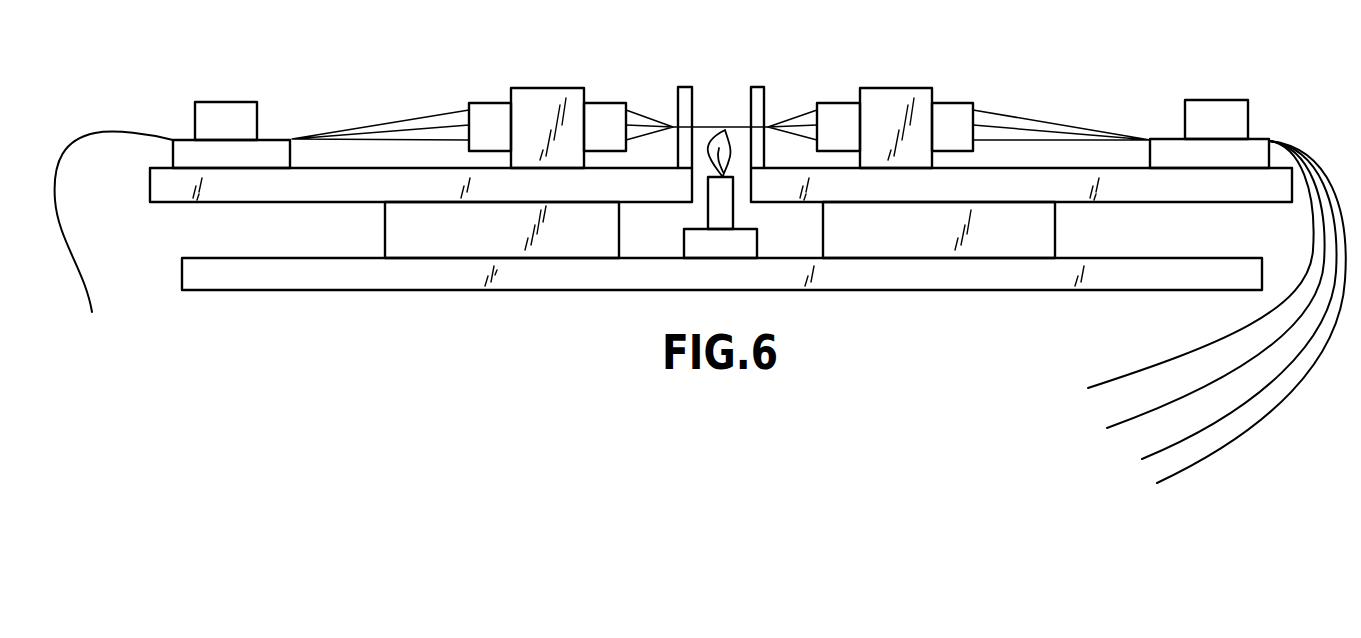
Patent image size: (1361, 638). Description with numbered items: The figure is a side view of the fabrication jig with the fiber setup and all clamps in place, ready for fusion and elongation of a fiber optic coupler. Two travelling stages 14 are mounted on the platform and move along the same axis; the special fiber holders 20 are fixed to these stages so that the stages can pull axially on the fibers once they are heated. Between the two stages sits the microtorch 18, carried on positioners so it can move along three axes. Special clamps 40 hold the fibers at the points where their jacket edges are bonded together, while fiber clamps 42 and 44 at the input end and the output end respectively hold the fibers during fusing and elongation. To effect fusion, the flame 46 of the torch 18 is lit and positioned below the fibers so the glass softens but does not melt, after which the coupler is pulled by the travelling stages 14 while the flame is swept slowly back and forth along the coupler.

The travelling stages 14 is at (550, 257).
The microtorch 18 is at (708, 208).
The fiber holders 20 is at (551, 90).
The clamps 40 is at (756, 87).
The fiber clamp 42 is at (232, 102).
The fiber clamp 44 is at (1215, 102).
The flame 46 is at (724, 132).